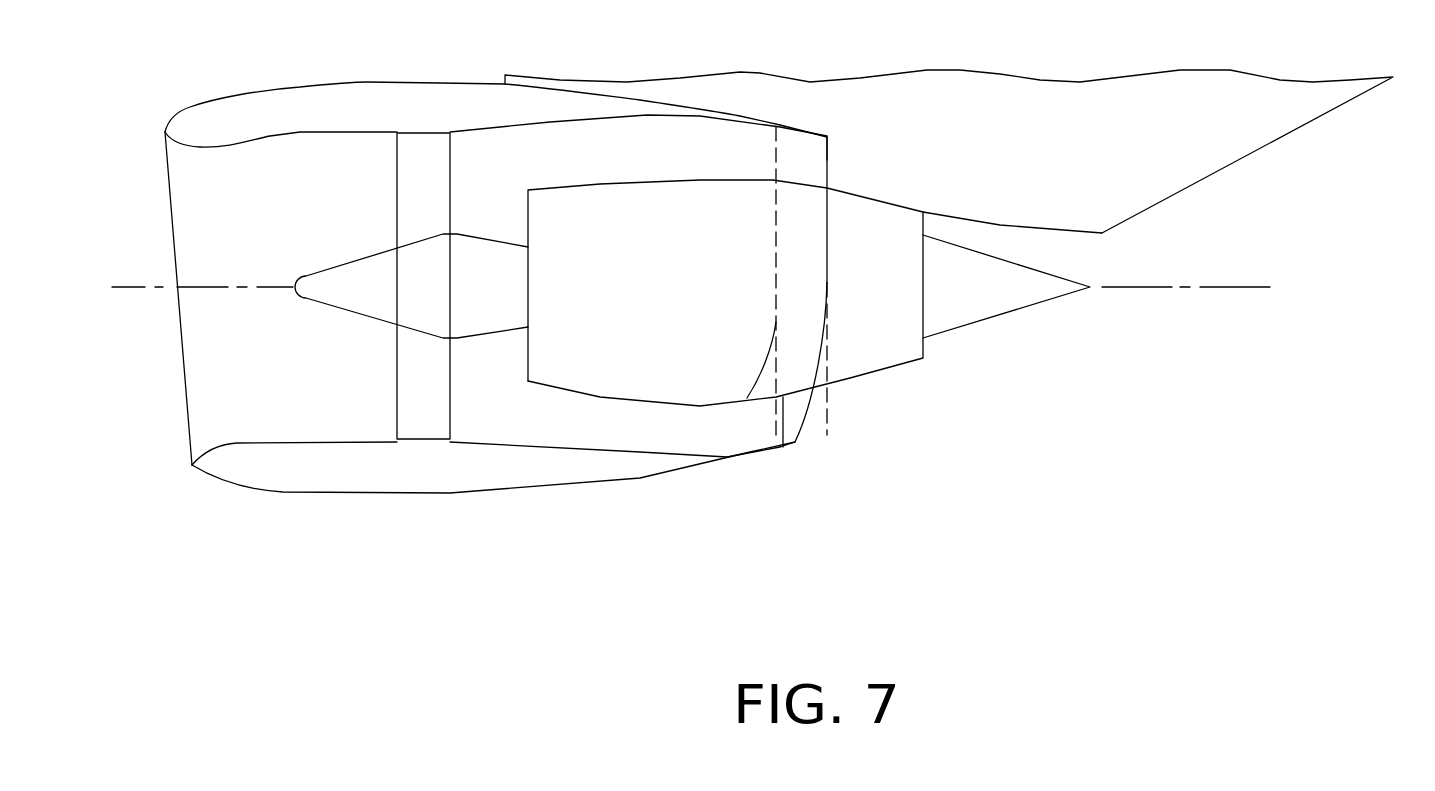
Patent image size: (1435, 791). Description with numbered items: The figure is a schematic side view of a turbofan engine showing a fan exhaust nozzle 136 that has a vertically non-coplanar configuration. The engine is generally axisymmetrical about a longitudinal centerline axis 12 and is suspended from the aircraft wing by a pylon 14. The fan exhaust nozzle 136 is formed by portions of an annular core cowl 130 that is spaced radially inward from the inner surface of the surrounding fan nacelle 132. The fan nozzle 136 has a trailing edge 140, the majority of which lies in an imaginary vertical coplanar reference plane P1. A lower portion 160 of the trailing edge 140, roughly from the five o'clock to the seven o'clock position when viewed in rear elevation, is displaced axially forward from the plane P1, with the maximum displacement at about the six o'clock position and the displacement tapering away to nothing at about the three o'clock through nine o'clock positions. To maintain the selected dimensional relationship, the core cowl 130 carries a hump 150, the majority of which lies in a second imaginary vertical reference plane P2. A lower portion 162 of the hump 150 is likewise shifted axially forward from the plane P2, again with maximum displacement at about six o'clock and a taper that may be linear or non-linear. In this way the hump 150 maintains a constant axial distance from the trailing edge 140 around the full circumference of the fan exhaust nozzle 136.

The longitudinal centerline axis 12 is at (1208, 285).
The pylon 14 is at (1178, 121).
The annular core cowl 130 is at (613, 240).
The fan nacelle 132 is at (418, 95).
The fan exhaust nozzle 136 is at (830, 108).
The trailing edge 140 is at (828, 167).
The hump 150 is at (776, 322).
The lower portion of the trailing edge 160 is at (803, 423).
The lower portion of the hump 162 is at (747, 397).
The vertical coplanar reference plane P1 is at (828, 417).
The vertical coplanar reference plane P2 is at (773, 417).